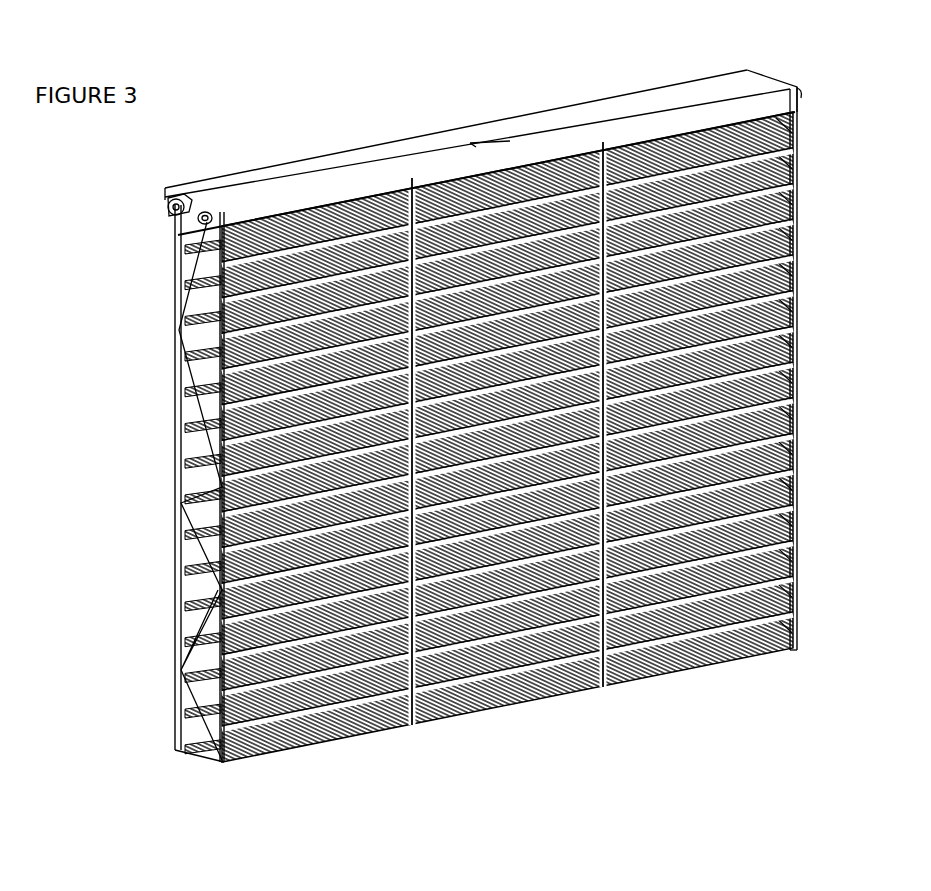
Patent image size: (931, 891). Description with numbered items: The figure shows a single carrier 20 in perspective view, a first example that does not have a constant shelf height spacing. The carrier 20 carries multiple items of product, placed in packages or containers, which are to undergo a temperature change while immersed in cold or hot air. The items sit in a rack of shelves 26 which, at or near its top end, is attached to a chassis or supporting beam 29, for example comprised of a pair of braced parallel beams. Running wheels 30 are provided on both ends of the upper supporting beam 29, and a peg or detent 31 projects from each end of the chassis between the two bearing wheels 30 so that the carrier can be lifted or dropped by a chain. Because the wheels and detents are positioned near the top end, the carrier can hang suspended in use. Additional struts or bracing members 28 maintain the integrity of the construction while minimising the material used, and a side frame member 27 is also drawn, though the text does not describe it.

The louver assembly 20 is at (535, 88).
The louver slats 26 is at (252, 310).
The side frame member 27 is at (177, 557).
The support brace 28 is at (192, 442).
The top rail 29 is at (386, 150).
The mounting bracket 30 is at (180, 196).
The roller 31 is at (168, 219).